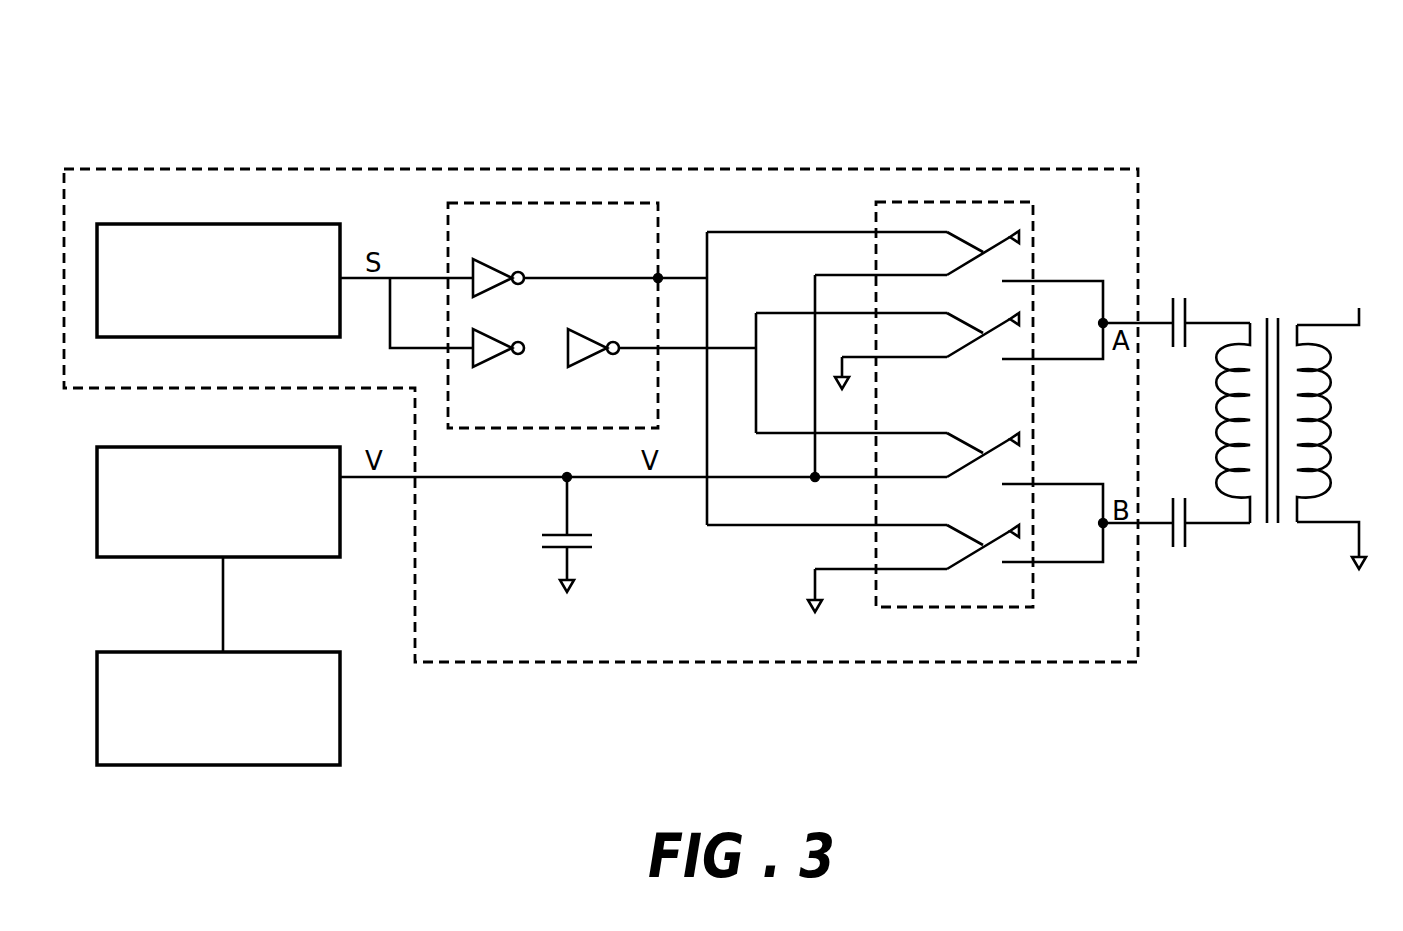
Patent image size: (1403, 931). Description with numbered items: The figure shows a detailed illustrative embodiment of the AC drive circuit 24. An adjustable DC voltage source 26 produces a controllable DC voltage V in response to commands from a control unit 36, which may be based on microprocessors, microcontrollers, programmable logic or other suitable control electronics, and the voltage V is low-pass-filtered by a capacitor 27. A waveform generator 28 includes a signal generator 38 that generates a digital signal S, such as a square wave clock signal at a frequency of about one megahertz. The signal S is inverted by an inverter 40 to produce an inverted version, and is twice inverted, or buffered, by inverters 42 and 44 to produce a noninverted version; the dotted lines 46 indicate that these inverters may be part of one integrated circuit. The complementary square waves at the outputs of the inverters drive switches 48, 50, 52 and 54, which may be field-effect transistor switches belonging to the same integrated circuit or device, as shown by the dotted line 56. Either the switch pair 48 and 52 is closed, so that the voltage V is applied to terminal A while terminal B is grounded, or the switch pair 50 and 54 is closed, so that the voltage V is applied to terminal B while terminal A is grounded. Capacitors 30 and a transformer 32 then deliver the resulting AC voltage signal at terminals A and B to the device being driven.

The AC drive circuit 24 is at (1118, 78).
The adjustable DC voltage source 26 is at (340, 527).
The capacitor 27 is at (599, 568).
The waveform generator 28 is at (705, 167).
The capacitors 30 is at (1178, 352).
The transformer 32 is at (1264, 301).
The control unit 36 is at (243, 767).
The signal generator 38 is at (220, 224).
The inverter 40 is at (507, 272).
The inverter 42 is at (507, 355).
The inverter 44 is at (600, 343).
The dotted lines 46 is at (553, 260).
The switch 48 is at (988, 228).
The switch 50 is at (976, 358).
The switch 52 is at (984, 428).
The switch 54 is at (985, 563).
The dotted line 56 is at (962, 372).